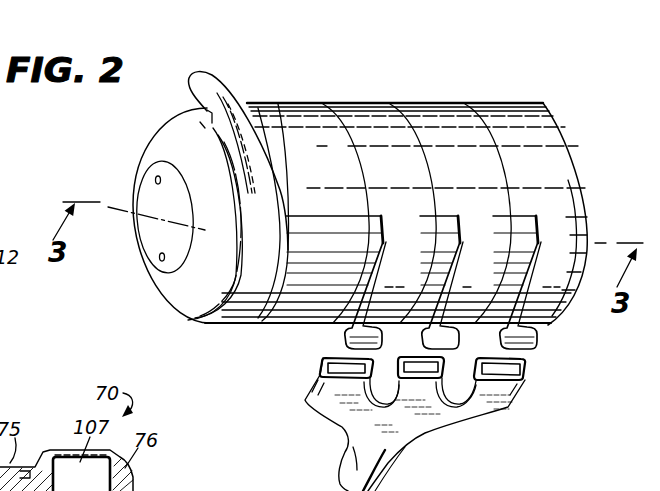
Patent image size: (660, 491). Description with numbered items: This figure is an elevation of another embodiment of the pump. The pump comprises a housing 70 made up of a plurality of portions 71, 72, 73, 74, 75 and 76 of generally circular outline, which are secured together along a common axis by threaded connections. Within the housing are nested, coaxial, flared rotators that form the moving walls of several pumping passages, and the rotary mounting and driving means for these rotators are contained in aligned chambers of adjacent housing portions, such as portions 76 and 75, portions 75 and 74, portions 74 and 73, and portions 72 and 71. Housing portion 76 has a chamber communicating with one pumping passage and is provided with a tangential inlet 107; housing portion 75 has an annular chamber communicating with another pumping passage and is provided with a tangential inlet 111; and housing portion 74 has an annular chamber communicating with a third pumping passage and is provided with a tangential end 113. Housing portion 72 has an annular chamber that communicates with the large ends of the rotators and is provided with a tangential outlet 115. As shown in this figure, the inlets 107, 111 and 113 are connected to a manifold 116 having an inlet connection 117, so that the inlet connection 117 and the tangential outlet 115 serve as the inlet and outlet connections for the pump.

The housing 70 is at (500, 84).
The housing portion 71 is at (147, 245).
The housing portion 72 is at (172, 127).
The housing portion 73 is at (274, 108).
The housing portion 74 is at (355, 107).
The housing portion 75 is at (422, 108).
The housing portion 76 is at (518, 108).
The tangential inlet 107 is at (541, 336).
The tangential inlet 111 is at (442, 295).
The tangential end 113 is at (347, 333).
The tangential outlet 115 is at (212, 80).
The manifold 116 is at (342, 457).
The inlet connection 117 is at (372, 472).